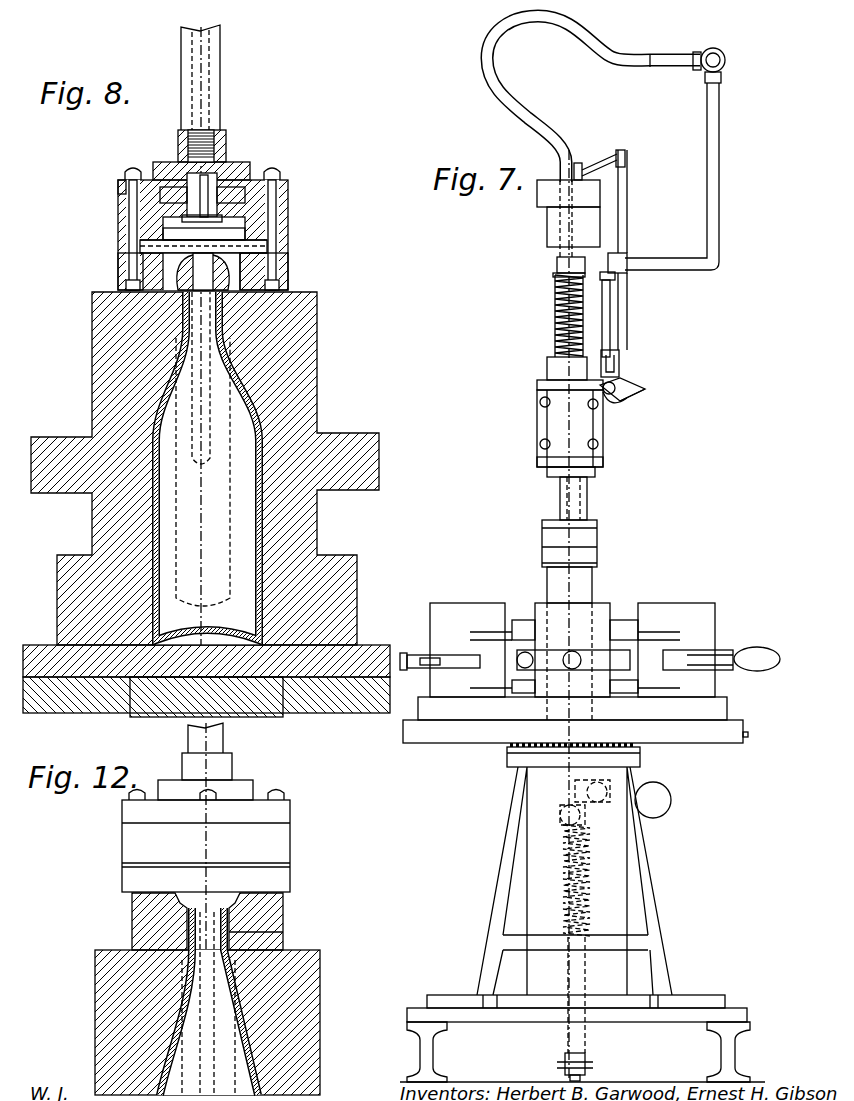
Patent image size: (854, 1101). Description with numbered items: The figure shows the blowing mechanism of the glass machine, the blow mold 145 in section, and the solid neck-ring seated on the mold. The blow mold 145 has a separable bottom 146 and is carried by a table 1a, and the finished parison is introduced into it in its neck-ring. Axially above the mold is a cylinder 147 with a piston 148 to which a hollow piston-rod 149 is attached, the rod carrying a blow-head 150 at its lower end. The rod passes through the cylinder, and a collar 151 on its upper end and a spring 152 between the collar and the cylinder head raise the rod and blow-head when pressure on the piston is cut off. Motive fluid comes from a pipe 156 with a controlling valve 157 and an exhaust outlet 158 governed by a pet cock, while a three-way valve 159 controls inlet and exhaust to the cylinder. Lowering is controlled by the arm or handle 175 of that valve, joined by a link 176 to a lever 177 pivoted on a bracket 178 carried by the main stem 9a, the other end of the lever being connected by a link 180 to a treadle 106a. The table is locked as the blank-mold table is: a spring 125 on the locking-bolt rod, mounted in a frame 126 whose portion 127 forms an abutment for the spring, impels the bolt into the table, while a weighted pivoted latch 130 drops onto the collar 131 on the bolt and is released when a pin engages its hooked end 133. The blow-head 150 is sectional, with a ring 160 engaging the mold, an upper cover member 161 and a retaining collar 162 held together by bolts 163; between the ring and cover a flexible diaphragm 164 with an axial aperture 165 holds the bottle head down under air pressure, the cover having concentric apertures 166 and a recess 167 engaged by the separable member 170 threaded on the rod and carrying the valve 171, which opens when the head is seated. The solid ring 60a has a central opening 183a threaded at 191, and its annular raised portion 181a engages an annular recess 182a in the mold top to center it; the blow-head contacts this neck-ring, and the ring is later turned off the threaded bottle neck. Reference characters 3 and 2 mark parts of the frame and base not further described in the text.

In FIG. 8, the blow mold 145 is at (92, 320).
In FIG. 12, the blow mold 145 is at (100, 1019).
In FIG. 7, the blow mold 145 is at (465, 603).
In FIG. 8, the separable bottom 146 is at (42, 645).
In FIG. 8, the table 1a is at (310, 700).
In FIG. 7, the table 1a is at (423, 737).
In FIG. 8, the piston-rod 149 is at (214, 73).
In FIG. 12, the piston-rod 149 is at (226, 743).
In FIG. 7, the piston-rod 149 is at (596, 494).
In FIG. 8, the blow-head 150 is at (289, 182).
In FIG. 12, the blow-head 150 is at (227, 846).
In FIG. 7, the blow-head 150 is at (602, 523).
In FIG. 8, the separable member 170 is at (226, 148).
In FIG. 8, the valve 171 is at (186, 163).
In FIG. 8, the retaining collar 162 is at (240, 163).
In FIG. 8, the bolts 163 is at (132, 167).
In FIG. 8, the recess 167 is at (125, 195).
In FIG. 8, the apertures 166 is at (150, 209).
In FIG. 8, the diaphragm 164 is at (140, 233).
In FIG. 8, the aperture 165 is at (118, 263).
In FIG. 8, the cover member 161 is at (288, 230).
In FIG. 8, the ring 160 is at (289, 263).
In FIG. 12, the solid ring 60a is at (150, 913).
In FIG. 12, the central opening 183a is at (286, 916).
In FIG. 12, the threaded portion 191 is at (290, 938).
In FIG. 12, the annular recess 182a is at (183, 959).
In FIG. 12, the annular raised portion 181a is at (245, 956).
In FIG. 7, the bracket 178 is at (578, 163).
In FIG. 7, the lever 177 is at (602, 158).
In FIG. 7, the link 176 is at (628, 219).
In FIG. 7, the main stem 9a is at (547, 229).
In FIG. 7, the link 180 is at (555, 249).
In FIG. 7, the collar 151 is at (550, 268).
In FIG. 7, the spring 152 is at (557, 314).
In FIG. 7, the pipe 156 is at (613, 313).
In FIG. 7, the controlling valve 157 is at (620, 356).
In FIG. 7, the exhaust outlet 158 is at (647, 388).
In FIG. 7, the arm or handle 175 is at (670, 402).
In FIG. 7, the cylinder 147 is at (543, 415).
In FIG. 7, the piston 148 is at (537, 418).
In FIG. 7, the three-way valve 159 is at (607, 400).
In FIG. 7, the hooked end 133 is at (497, 743).
In FIG. 7, the stand head 3 is at (640, 755).
In FIG. 7, the collar 131 is at (582, 818).
In FIG. 7, the pivoted latch 130 is at (650, 814).
In FIG. 7, the frame 126 is at (642, 868).
In FIG. 7, the spring 125 is at (588, 899).
In FIG. 7, the abutment portion 127 is at (540, 950).
In FIG. 7, the base 2 is at (667, 1015).
In FIG. 7, the treadle 106a is at (597, 1061).